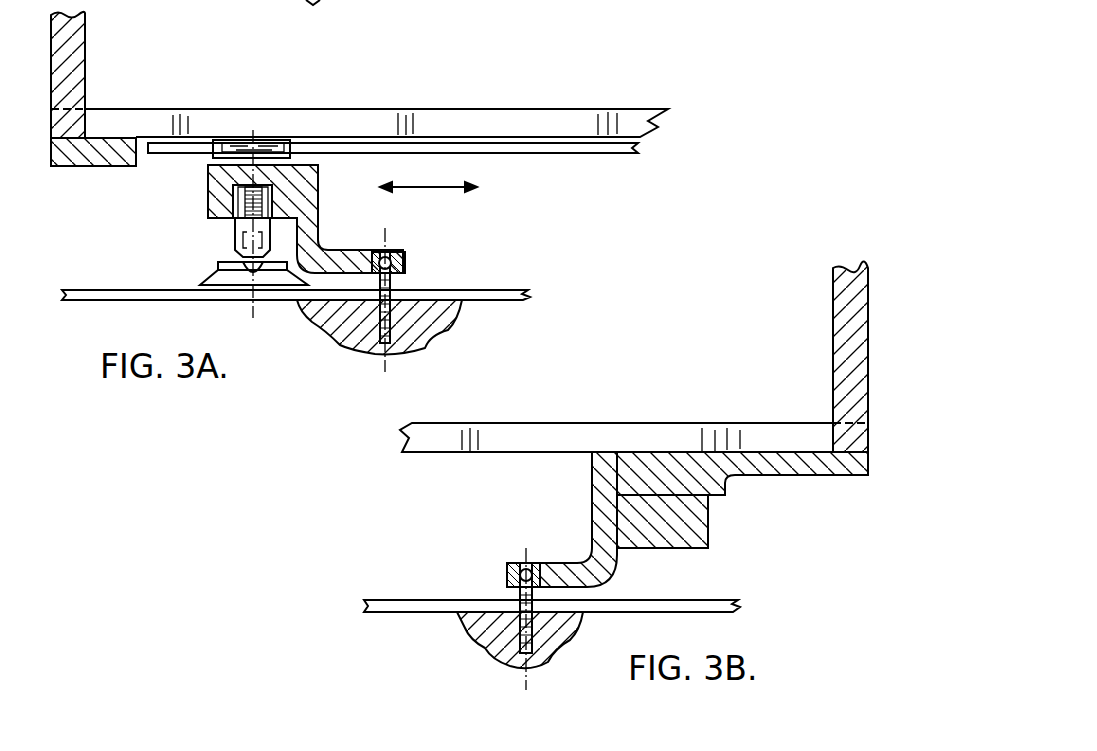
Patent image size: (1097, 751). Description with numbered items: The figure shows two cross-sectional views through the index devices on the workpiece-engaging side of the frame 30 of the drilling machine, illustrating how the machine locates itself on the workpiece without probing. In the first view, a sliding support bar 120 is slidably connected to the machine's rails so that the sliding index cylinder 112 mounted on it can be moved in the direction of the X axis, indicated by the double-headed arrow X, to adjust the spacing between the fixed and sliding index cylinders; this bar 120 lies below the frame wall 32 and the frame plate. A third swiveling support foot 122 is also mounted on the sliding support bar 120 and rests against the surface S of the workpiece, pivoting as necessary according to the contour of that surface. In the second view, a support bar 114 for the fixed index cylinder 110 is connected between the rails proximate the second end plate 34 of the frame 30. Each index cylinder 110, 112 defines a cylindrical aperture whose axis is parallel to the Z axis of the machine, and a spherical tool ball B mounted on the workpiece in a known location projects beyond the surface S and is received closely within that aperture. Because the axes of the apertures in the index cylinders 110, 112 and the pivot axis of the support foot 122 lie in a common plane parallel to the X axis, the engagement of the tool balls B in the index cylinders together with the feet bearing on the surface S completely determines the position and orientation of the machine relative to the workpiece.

In FIG. 3A, the frame 30 is at (104, 178).
In FIG. 3B, the frame 30 is at (813, 480).
In FIG. 3A, the frame wall 32 is at (85, 62).
In FIG. 3B, the second end plate 34 is at (833, 310).
In FIG. 3B, the fixed index cylinder 110 is at (507, 570).
In FIG. 3A, the sliding index cylinder 112 is at (405, 263).
In FIG. 3B, the support bar 114 is at (675, 467).
In FIG. 3A, the sliding support bar 120 is at (212, 200).
In FIG. 3A, the third swiveling support foot 122 is at (212, 272).
In FIG. 3A, the tool ball B is at (384, 250).
In FIG. 3B, the tool ball B is at (528, 562).
In FIG. 3A, the surface S is at (508, 288).
In FIG. 3B, the surface S is at (390, 598).
In FIG. 3A, the X axis X is at (433, 188).